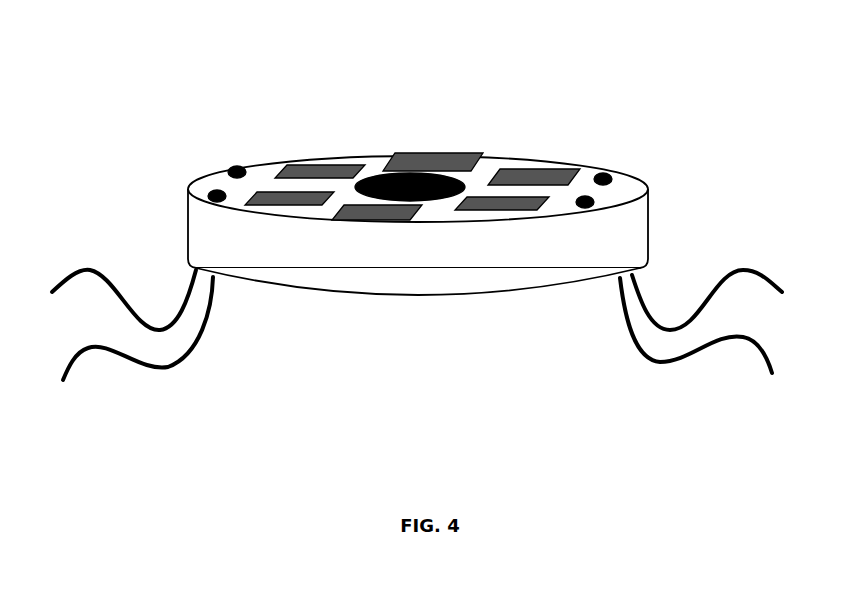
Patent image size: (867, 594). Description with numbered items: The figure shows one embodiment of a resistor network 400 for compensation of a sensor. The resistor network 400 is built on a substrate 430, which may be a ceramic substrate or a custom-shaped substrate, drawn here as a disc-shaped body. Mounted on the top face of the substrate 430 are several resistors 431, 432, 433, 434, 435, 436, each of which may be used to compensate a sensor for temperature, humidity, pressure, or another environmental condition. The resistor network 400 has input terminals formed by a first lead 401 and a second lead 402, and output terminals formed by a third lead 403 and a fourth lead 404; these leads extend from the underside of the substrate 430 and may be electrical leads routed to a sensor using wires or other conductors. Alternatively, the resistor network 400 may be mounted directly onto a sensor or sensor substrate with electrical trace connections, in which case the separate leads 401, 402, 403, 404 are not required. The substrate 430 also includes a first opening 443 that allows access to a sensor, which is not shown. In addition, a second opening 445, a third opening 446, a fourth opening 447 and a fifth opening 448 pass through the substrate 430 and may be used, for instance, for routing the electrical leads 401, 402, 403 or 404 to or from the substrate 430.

The resistor network 400 is at (437, 57).
The first lead 401 is at (112, 290).
The second lead 402 is at (160, 366).
The third lead 403 is at (748, 272).
The fourth lead 404 is at (742, 335).
The substrate 430 is at (413, 301).
The resistor 431 is at (335, 163).
The resistor 432 is at (420, 150).
The resistor 433 is at (560, 168).
The resistor 434 is at (272, 206).
The resistor 435 is at (375, 221).
The resistor 436 is at (500, 211).
The first opening 443 is at (484, 158).
The second opening 445 is at (230, 172).
The third opening 446 is at (212, 193).
The fourth opening 447 is at (613, 178).
The fifth opening 448 is at (640, 189).